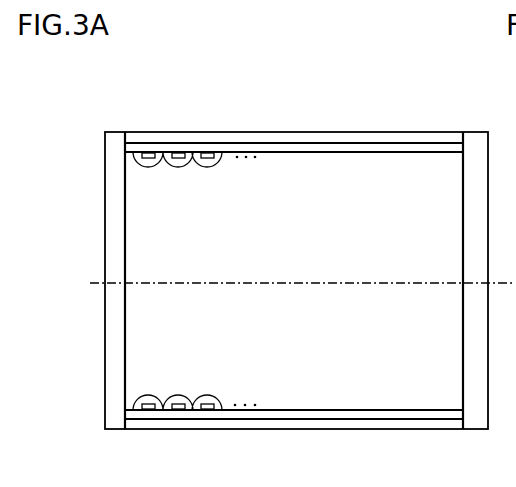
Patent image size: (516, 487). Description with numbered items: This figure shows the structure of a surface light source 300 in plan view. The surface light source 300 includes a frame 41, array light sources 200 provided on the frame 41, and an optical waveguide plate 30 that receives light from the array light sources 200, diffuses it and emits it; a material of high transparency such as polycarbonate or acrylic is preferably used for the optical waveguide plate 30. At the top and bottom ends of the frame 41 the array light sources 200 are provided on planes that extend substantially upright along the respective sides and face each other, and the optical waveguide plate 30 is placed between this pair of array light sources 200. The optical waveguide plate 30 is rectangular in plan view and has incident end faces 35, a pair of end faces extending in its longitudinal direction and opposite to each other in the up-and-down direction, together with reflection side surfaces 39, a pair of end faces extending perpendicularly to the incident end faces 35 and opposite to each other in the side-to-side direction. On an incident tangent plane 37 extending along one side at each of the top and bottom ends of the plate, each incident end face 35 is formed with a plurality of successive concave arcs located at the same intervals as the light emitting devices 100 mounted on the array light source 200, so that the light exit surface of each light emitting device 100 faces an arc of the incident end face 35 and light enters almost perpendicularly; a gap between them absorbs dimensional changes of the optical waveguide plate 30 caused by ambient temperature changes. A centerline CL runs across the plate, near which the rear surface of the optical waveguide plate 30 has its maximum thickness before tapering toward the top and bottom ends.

The surface light source 300 is at (495, 63).
The reflection side surfaces 39 is at (125, 253).
The optical waveguide plate 30 is at (335, 242).
The frame 41 is at (162, 137).
The array light source 200 is at (233, 150).
The incident tangent plane 37 is at (292, 152).
The incident end faces 35 is at (135, 165).
The light emitting devices 100 is at (147, 157).
The centerline CL is at (433, 283).